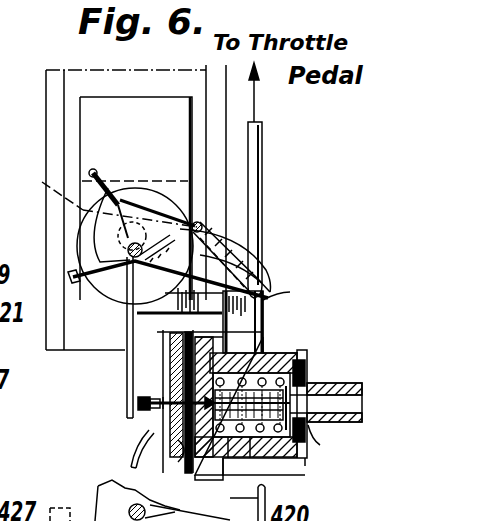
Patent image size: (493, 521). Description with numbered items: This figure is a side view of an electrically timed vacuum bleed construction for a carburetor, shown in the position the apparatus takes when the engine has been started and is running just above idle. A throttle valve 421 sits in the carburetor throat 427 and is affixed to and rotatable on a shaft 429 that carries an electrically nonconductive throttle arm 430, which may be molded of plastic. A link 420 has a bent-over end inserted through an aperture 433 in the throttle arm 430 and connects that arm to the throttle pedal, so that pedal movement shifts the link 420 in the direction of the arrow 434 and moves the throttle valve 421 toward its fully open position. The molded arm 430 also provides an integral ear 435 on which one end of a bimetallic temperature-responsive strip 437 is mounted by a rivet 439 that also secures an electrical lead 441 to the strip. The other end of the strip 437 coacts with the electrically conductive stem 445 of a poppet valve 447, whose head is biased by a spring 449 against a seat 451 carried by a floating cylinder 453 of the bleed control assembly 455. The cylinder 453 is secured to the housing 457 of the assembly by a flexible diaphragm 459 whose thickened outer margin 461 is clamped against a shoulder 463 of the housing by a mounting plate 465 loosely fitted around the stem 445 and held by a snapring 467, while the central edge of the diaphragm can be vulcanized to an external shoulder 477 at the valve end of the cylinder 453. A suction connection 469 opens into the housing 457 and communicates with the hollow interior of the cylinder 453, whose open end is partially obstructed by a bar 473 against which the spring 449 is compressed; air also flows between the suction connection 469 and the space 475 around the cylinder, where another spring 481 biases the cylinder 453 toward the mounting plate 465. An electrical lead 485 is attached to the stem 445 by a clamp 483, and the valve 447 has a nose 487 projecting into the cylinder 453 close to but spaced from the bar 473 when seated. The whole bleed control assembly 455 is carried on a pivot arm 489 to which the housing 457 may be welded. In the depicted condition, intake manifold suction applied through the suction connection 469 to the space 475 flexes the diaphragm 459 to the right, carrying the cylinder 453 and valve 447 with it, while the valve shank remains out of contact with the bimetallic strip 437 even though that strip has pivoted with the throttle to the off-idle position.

The link 420 is at (262, 163).
The throttle valve 421 is at (73, 273).
The carburetor throat 427 is at (78, 150).
The shaft 429 is at (128, 248).
The throttle arm 430 is at (200, 228).
The aperture 433 is at (266, 292).
The arrow 434 is at (258, 105).
The ear 435 is at (120, 202).
The bimetallic temperature-responsive strip 437 is at (126, 322).
The rivet 439 is at (99, 232).
The electrical lead 441 is at (100, 170).
The stem 445 is at (158, 395).
The poppet valve 447 is at (264, 354).
The spring 449 is at (320, 383).
The seat 451 is at (185, 390).
The floating cylinder 453 is at (300, 364).
The bleed control assembly 455 is at (305, 460).
The housing 457 is at (253, 450).
The flexible diaphragm 459 is at (214, 320).
The outer margin 461 is at (180, 443).
The shoulder 463 is at (213, 478).
The mounting plate 465 is at (177, 440).
The snapring 467 is at (162, 342).
The suction connection 469 is at (313, 403).
The bar 473 is at (327, 420).
The space 475 is at (272, 328).
The external shoulder 477 is at (244, 322).
The spring 481 is at (268, 510).
The clamp 483 is at (136, 402).
The electrical lead 485 is at (143, 420).
The nose 487 is at (230, 448).
The pivot arm 489 is at (263, 302).